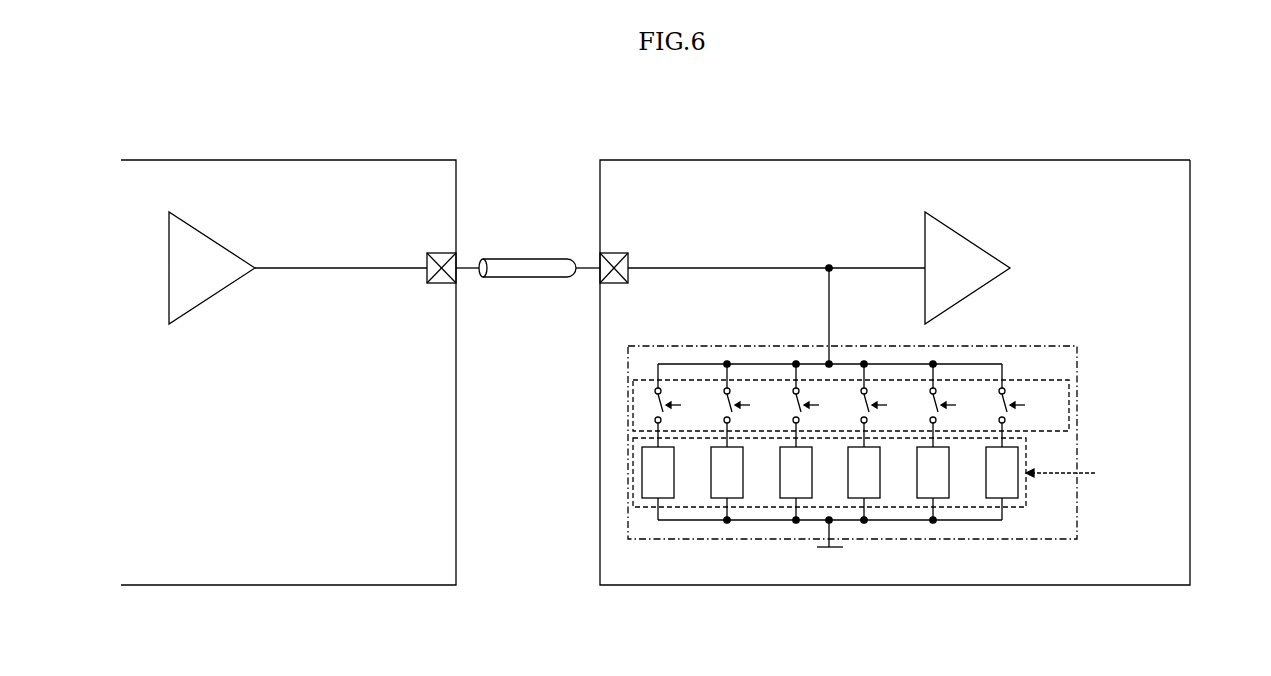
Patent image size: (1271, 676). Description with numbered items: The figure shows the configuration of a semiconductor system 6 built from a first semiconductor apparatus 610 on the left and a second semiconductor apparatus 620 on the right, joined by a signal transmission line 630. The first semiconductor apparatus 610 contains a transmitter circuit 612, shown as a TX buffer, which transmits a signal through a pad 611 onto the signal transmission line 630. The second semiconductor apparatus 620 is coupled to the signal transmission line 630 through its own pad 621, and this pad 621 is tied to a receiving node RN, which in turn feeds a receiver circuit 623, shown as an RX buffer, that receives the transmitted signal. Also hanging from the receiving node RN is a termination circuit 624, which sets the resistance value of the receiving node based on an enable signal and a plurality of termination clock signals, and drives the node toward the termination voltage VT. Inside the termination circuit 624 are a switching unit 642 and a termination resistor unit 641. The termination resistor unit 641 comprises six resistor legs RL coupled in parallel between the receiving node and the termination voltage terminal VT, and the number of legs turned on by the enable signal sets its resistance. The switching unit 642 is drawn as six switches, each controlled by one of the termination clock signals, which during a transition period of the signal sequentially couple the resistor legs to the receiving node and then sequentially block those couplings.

The semiconductor system 6 is at (120, 113).
The first semiconductor apparatus 610 is at (406, 160).
The pad 611 is at (435, 252).
The transmitter circuit 612 is at (206, 239).
The second semiconductor apparatus 620 is at (1006, 159).
The pad 621 is at (617, 251).
The receiver circuit 623 is at (963, 240).
The termination circuit 624 is at (874, 345).
The signal transmission line 630 is at (528, 259).
The termination resistor unit 641 is at (1012, 508).
The switching unit 642 is at (1008, 379).